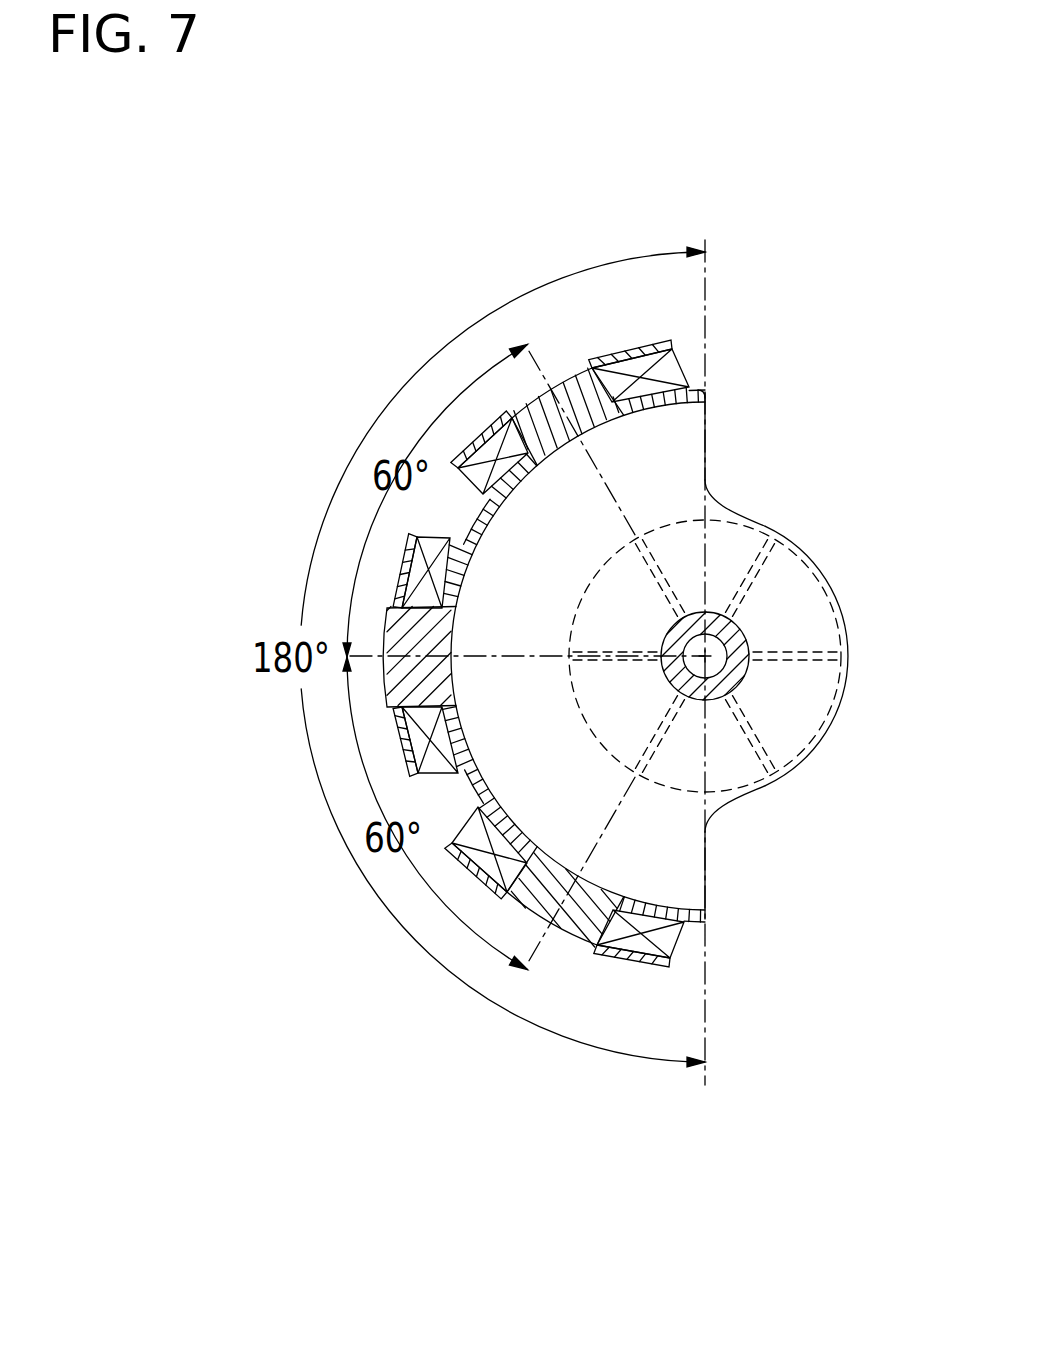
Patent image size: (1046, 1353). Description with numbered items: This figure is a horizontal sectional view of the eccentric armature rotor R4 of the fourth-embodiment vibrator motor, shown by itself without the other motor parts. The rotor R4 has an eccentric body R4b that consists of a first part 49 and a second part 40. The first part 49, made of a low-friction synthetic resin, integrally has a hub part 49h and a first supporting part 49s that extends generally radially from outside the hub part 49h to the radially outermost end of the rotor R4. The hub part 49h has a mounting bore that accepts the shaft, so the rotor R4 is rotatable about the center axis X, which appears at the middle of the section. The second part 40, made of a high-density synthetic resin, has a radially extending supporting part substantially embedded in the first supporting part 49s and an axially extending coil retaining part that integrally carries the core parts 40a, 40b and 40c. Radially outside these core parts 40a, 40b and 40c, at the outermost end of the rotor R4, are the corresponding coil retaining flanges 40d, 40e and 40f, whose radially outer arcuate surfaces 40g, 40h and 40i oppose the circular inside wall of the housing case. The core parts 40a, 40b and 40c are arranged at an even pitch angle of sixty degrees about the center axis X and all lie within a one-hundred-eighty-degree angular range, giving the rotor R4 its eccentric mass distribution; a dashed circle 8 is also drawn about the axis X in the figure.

The second part 40 is at (635, 908).
The core part 40a is at (565, 377).
The core part 40b is at (410, 665).
The core part 40c is at (572, 920).
The coil retaining flange 40d is at (622, 350).
The coil retaining flange 40e is at (403, 562).
The coil retaining flange 40f is at (627, 960).
The arcuate surface 40g is at (585, 363).
The arcuate surface 40h is at (392, 610).
The arcuate surface 40i is at (585, 952).
The first part 49 is at (673, 453).
The first supporting part 49s is at (670, 855).
The hub part 49h is at (720, 628).
The rotor circle 8 is at (813, 632).
The center axis X is at (707, 657).
The eccentric armature rotor R4 is at (718, 390).
The eccentric body R4b is at (718, 498).